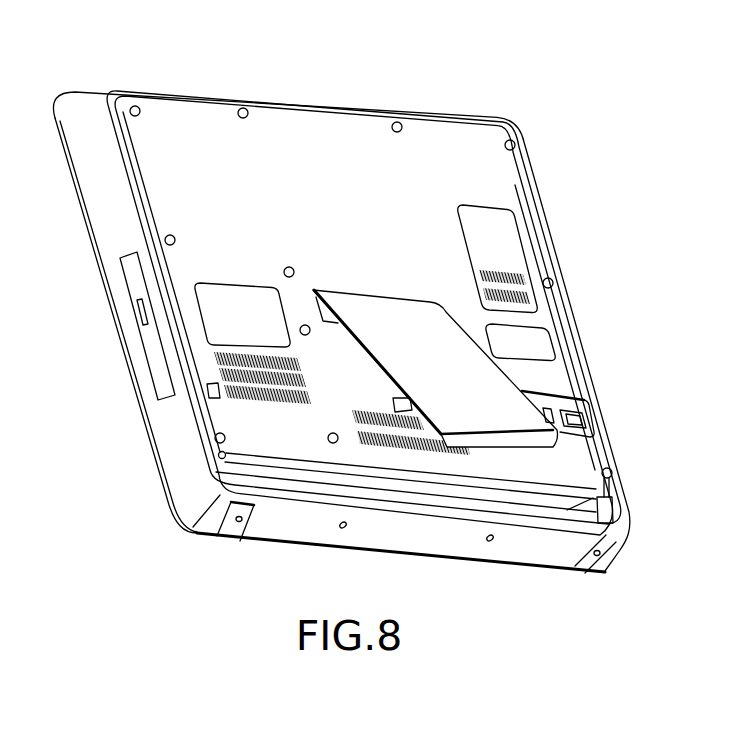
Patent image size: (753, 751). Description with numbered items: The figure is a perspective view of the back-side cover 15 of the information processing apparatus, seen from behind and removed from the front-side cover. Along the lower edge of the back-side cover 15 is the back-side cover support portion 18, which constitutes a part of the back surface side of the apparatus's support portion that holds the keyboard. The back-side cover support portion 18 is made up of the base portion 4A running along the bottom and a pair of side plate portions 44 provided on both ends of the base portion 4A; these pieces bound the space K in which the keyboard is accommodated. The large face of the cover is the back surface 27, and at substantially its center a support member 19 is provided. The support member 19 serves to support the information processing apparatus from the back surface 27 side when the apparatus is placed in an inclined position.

The back-side cover 15 is at (330, 101).
The back-side cover support portion 18 is at (146, 470).
The back surface 27 is at (437, 245).
The support member 19 is at (490, 382).
The space K is at (623, 500).
The base portion 4A is at (390, 532).
The side plate portions 44 is at (193, 492).